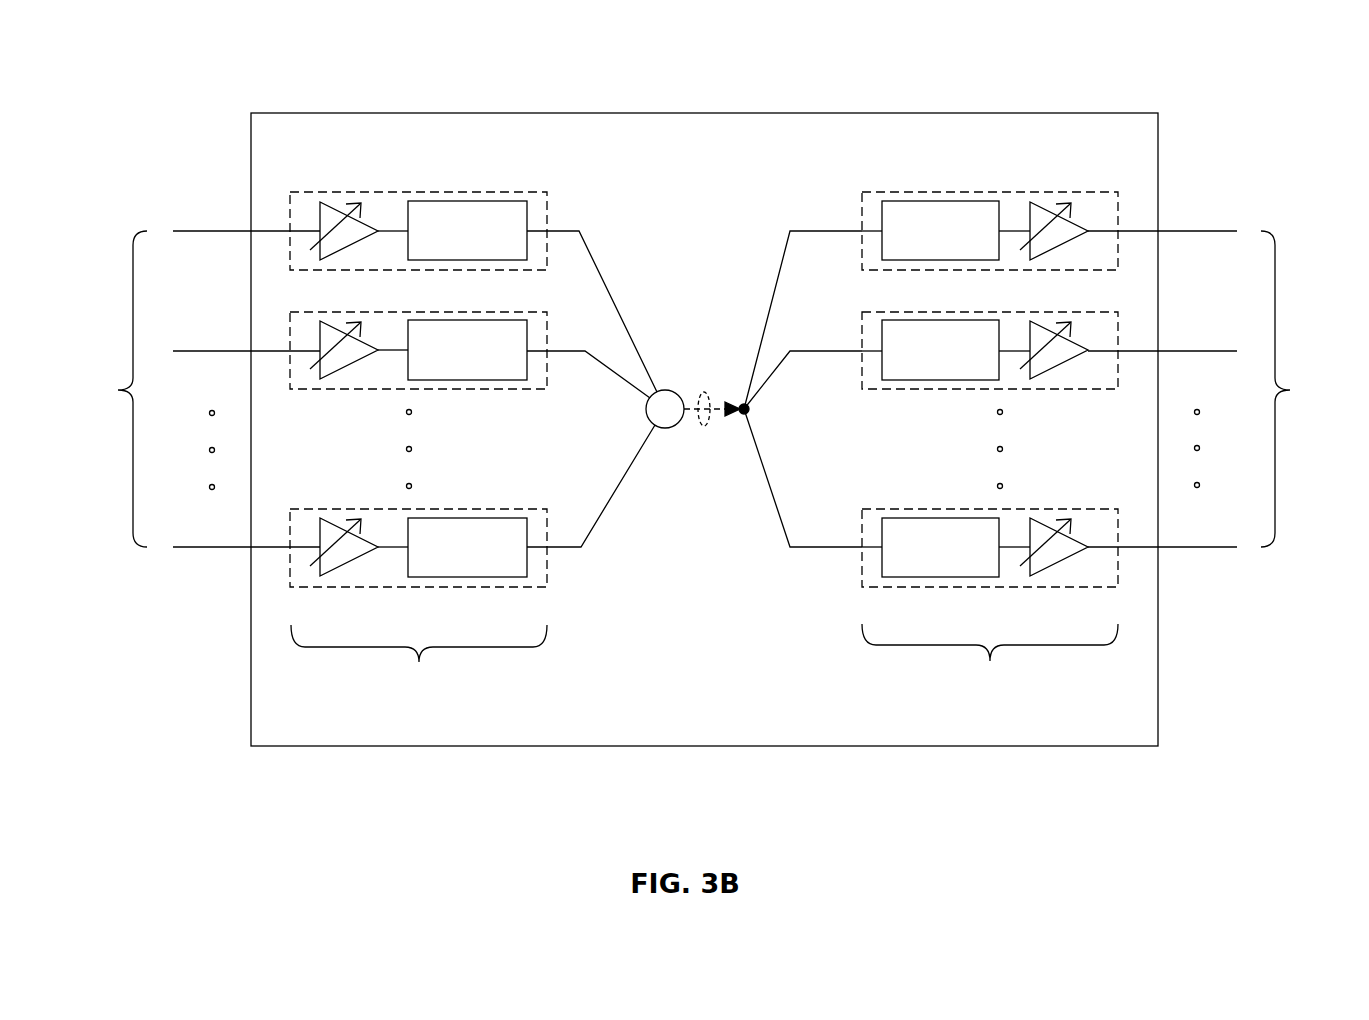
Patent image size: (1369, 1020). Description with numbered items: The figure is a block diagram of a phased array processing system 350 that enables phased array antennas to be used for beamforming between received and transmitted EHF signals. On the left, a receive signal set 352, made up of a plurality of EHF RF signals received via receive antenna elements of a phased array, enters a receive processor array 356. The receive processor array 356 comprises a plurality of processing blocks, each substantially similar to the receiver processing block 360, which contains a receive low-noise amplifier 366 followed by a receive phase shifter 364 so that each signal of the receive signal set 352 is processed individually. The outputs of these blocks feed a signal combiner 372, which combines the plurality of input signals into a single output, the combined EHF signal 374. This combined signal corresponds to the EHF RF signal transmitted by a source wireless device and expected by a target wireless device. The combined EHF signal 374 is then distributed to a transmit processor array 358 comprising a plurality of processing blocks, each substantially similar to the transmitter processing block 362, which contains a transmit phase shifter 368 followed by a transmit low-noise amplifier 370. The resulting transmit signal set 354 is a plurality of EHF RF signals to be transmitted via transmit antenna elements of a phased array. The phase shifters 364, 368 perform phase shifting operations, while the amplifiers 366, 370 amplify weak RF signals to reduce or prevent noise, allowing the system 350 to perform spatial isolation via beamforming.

The phased array processing system 350 is at (212, 78).
The receive signal set 352 is at (181, 389).
The transmit signal set 354 is at (1227, 389).
The receive processor array 356 is at (418, 431).
The transmit processor array 358 is at (990, 430).
The receiver processing block 360 is at (418, 224).
The transmitter processing block 362 is at (990, 224).
The receive phase shifter 364 is at (447, 262).
The receive low-noise amplifier 366 is at (334, 258).
The transmit phase shifter 368 is at (920, 262).
The transmit low-noise amplifier 370 is at (1042, 258).
The signal combiner 372 is at (672, 428).
The combined EHF signal 374 is at (703, 390).